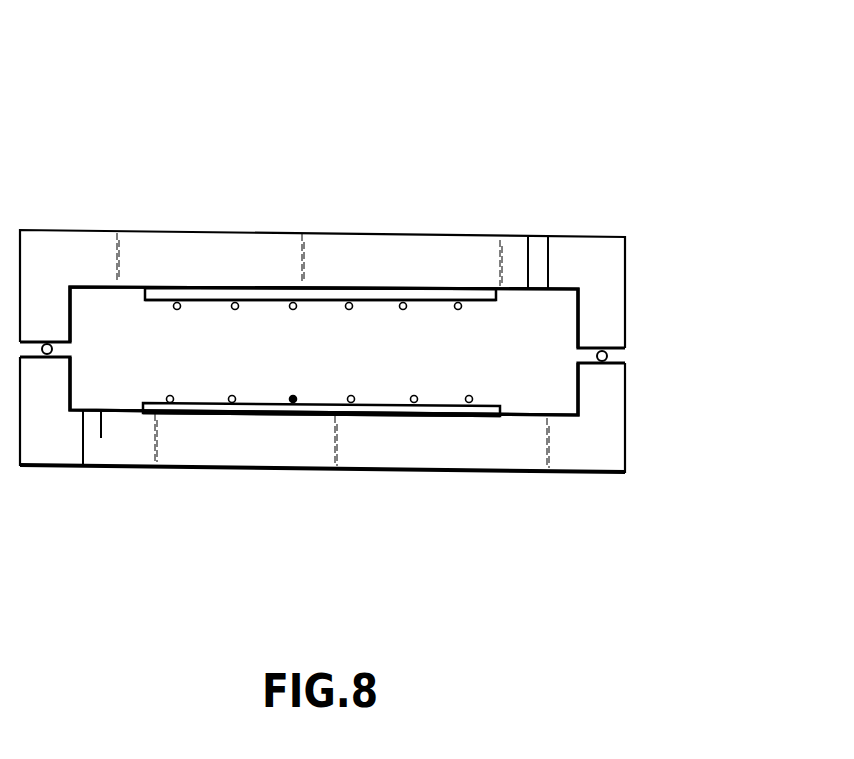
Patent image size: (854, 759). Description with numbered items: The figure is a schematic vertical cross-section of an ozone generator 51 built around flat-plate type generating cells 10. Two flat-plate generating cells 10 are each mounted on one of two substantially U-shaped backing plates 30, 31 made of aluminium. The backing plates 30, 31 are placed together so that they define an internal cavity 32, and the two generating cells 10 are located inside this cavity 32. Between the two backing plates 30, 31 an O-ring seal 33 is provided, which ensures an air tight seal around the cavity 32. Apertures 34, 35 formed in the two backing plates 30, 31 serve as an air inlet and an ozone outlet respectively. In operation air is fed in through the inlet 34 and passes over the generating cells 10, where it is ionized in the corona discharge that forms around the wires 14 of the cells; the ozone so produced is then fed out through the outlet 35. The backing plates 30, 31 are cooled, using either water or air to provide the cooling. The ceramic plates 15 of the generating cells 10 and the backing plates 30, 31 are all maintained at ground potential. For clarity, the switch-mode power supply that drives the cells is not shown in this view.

The ozone generator 51 is at (613, 168).
The backing plate 30 is at (587, 450).
The backing plate 31 is at (252, 255).
The internal cavity 32 is at (205, 347).
The O-ring seal 33 is at (47, 343).
The aperture (air inlet) 34 is at (84, 438).
The aperture (ozone outlet) 35 is at (538, 250).
The flat-plate generating cell 10 is at (482, 288).
The wires 14 is at (347, 297).
The ceramic plate 15 is at (387, 295).